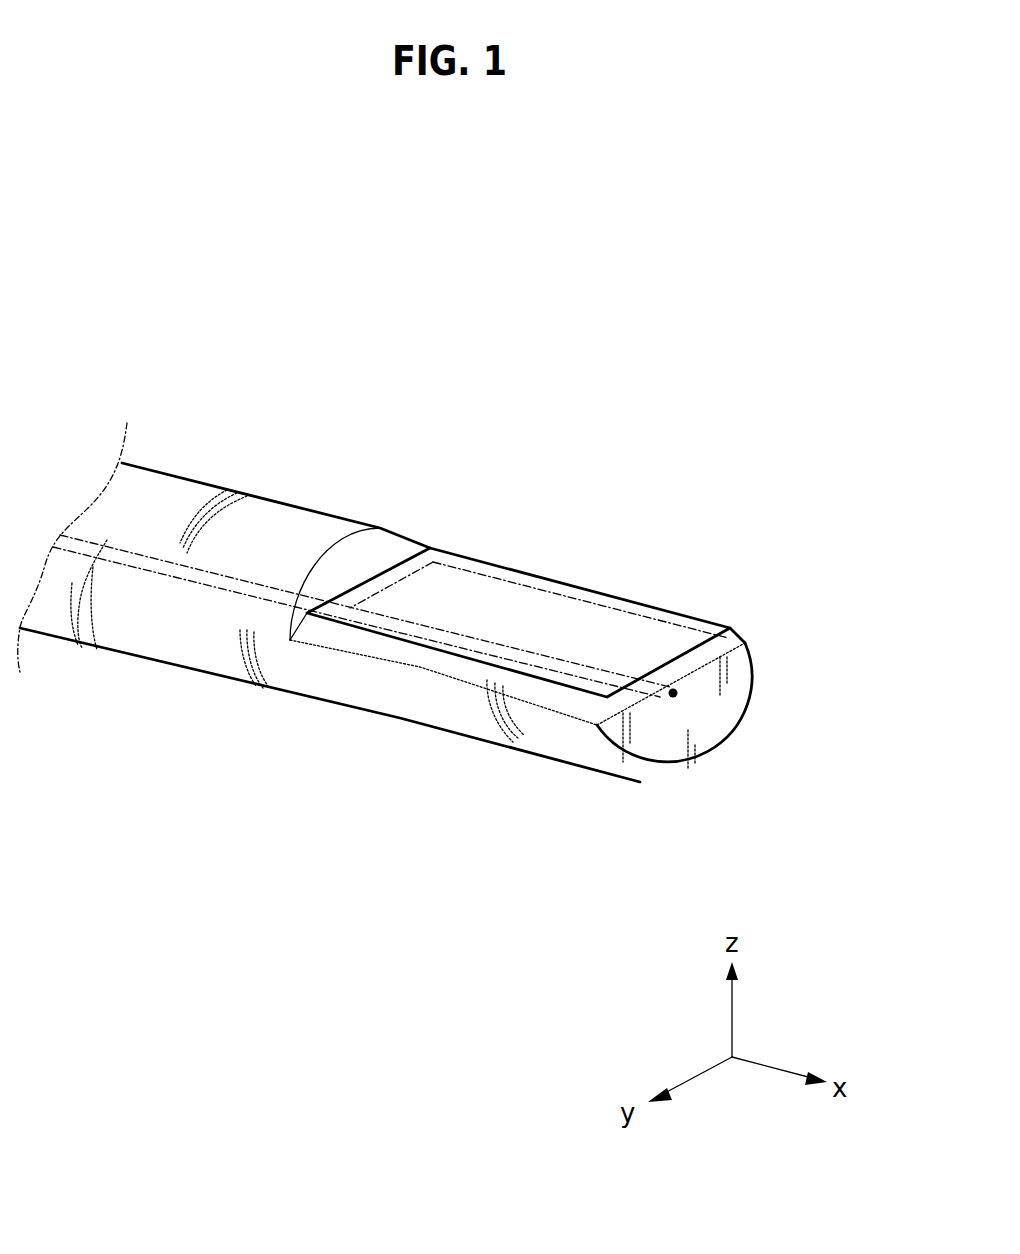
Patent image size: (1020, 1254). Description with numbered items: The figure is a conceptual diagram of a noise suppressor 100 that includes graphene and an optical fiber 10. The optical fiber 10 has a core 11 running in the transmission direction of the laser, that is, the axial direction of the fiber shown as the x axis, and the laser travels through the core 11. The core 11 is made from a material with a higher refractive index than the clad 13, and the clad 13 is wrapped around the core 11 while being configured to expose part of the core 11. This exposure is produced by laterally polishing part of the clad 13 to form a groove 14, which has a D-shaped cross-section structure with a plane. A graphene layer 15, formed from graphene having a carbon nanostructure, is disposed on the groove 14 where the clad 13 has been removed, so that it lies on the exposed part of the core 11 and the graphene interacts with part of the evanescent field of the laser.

The noise suppressor 100 is at (220, 160).
The optical fiber 10 is at (345, 395).
The core 11 is at (247, 580).
The clad 13 is at (353, 559).
The groove 14 is at (445, 668).
The graphene layer 15 is at (626, 597).